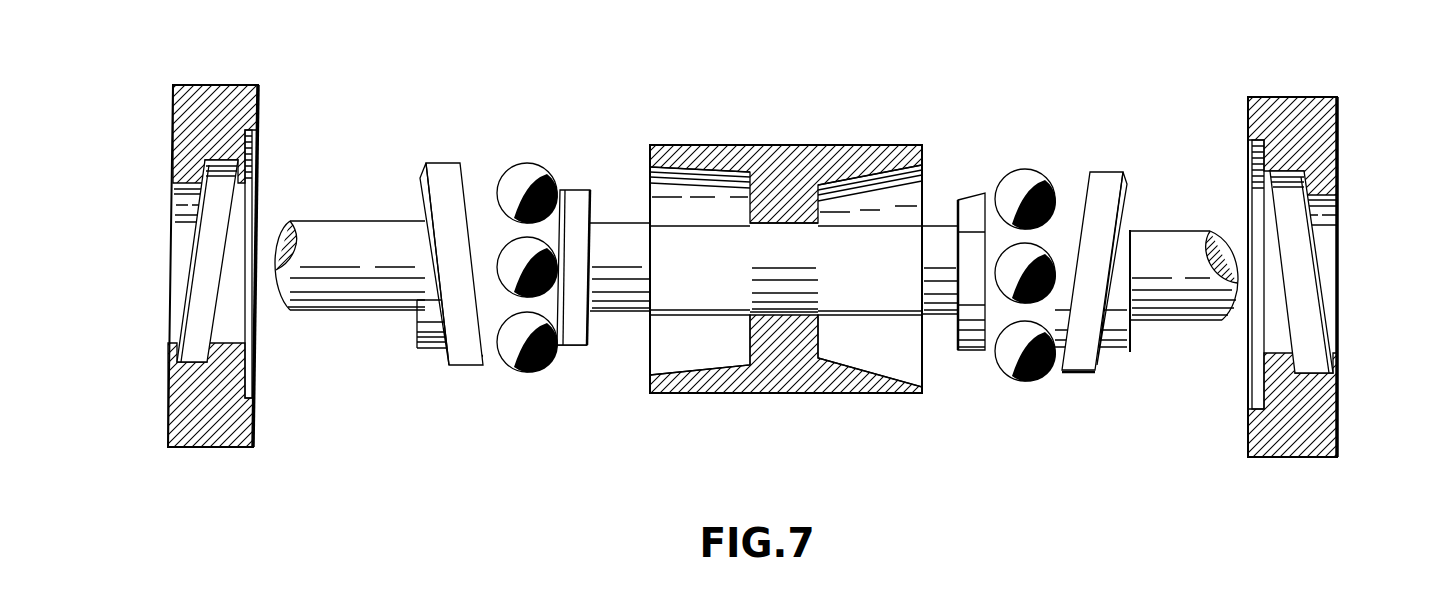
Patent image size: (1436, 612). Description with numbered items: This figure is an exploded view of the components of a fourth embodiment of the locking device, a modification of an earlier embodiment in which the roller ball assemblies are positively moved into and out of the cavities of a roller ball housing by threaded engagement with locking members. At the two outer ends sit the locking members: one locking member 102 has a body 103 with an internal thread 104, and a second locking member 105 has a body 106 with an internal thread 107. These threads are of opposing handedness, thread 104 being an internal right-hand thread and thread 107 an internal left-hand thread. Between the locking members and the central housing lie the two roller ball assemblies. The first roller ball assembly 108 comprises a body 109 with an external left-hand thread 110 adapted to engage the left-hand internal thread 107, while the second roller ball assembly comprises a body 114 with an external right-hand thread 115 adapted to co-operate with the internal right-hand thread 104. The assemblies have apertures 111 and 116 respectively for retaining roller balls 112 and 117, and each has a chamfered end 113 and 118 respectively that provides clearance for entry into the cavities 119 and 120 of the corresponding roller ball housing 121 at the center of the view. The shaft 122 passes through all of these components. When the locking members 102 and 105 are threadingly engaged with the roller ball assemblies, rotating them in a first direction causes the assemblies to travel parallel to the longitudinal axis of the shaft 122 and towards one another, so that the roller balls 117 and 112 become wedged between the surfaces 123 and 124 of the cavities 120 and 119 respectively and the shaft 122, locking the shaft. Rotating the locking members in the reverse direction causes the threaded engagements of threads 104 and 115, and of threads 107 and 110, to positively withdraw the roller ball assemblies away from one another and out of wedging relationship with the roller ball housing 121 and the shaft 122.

The locking member 102 is at (1292, 106).
The body 103 is at (1283, 452).
The internal thread 104 is at (1320, 364).
The second locking member 105 is at (247, 110).
The body 106 is at (246, 436).
The internal thread 107 is at (198, 343).
The first roller ball assembly 108 is at (483, 243).
The body 109 is at (428, 312).
The external left-hand thread 110 is at (450, 358).
The apertures 111 is at (567, 228).
The roller balls 112 is at (515, 252).
The chamfered end 113 is at (575, 265).
The body 114 is at (1035, 229).
The external right-hand thread 115 is at (1104, 229).
The apertures 116 is at (1055, 248).
The roller balls 117 is at (1018, 167).
The chamfered end 118 is at (963, 232).
The cavity 119 is at (658, 353).
The cavity 120 is at (893, 355).
The roller ball housing 121 is at (772, 256).
The shaft 122 is at (1210, 288).
The surface 123 is at (838, 183).
The surface 124 is at (707, 167).